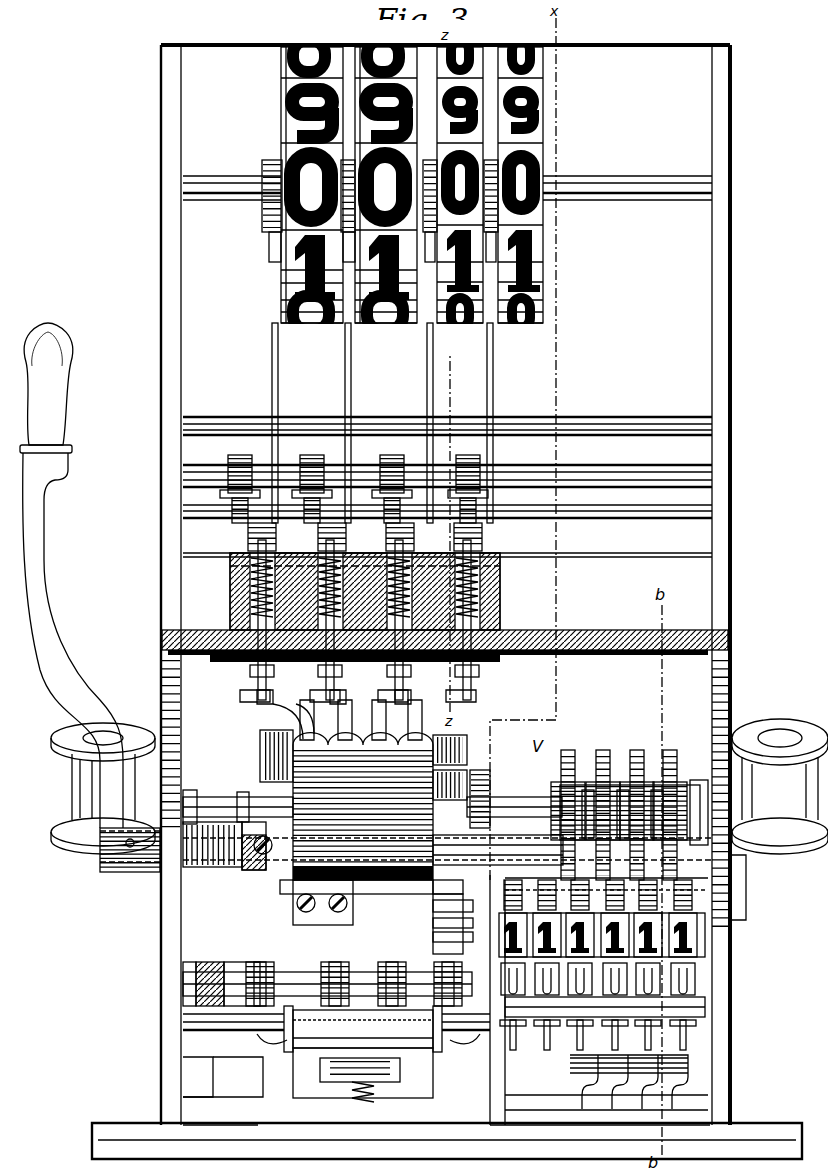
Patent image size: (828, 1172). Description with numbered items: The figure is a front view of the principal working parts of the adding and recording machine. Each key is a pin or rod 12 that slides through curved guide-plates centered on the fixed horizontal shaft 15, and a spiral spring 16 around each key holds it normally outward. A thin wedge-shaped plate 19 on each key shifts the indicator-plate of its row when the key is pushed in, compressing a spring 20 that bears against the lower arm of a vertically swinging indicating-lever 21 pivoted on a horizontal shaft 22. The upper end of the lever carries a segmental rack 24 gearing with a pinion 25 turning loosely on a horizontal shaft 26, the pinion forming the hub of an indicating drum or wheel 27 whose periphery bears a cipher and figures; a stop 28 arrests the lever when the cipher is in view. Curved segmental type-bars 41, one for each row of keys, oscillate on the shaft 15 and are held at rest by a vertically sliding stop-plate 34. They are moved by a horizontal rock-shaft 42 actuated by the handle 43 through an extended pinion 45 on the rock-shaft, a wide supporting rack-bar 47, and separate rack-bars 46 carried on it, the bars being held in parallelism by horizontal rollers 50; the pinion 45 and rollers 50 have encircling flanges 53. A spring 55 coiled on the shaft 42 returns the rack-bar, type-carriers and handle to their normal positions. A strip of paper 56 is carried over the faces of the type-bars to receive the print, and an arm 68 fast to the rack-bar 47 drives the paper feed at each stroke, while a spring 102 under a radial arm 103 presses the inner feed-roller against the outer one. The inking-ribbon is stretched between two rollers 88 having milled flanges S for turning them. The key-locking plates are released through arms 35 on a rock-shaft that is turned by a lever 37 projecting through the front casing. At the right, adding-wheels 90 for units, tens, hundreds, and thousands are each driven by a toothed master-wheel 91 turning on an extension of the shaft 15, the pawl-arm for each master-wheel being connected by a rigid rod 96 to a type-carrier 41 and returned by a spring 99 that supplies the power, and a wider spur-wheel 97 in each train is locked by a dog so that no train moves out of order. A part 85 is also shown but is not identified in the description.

The key 12 is at (369, 625).
The fixed horizontal shaft 15 is at (372, 807).
The spiral spring 16 is at (379, 591).
The wedge-shaped plate 19 is at (363, 536).
The spring 20 is at (354, 480).
The indicating-lever 21 is at (278, 380).
The horizontal shaft 22 is at (570, 472).
The segmental rack 24 is at (268, 215).
The pinion 25 is at (268, 164).
The horizontal shaft 26 is at (600, 186).
The indicating drum or wheel 27 is at (408, 192).
The stop 28 is at (570, 422).
The vertically-sliding stop-plate 34 is at (364, 672).
The arm 35 is at (327, 969).
The arm or lever 37 is at (210, 962).
The type-bar 41 is at (357, 721).
The rock-shaft 42 is at (316, 859).
The handle 43 is at (44, 535).
The extended pinion 45 is at (356, 888).
The rack-bar 46 is at (363, 806).
The supporting rack-bar 47 is at (420, 826).
The horizontal roller 50 is at (336, 1029).
The encircling flange 53 is at (355, 940).
The spring 55 is at (212, 855).
The strip of paper 56 is at (276, 756).
The arm 68 is at (293, 912).
The post 85 is at (490, 785).
The roller 88 is at (438, 819).
The adding-wheel 90 is at (602, 965).
The master-wheel 91 is at (629, 804).
The rigid bar or rod 96 is at (446, 911).
The spur-wheel 97 is at (621, 797).
The spring 99 is at (614, 1082).
The spring 102 is at (372, 1098).
The arm 103 is at (363, 1073).
The milled flange S is at (428, 805).